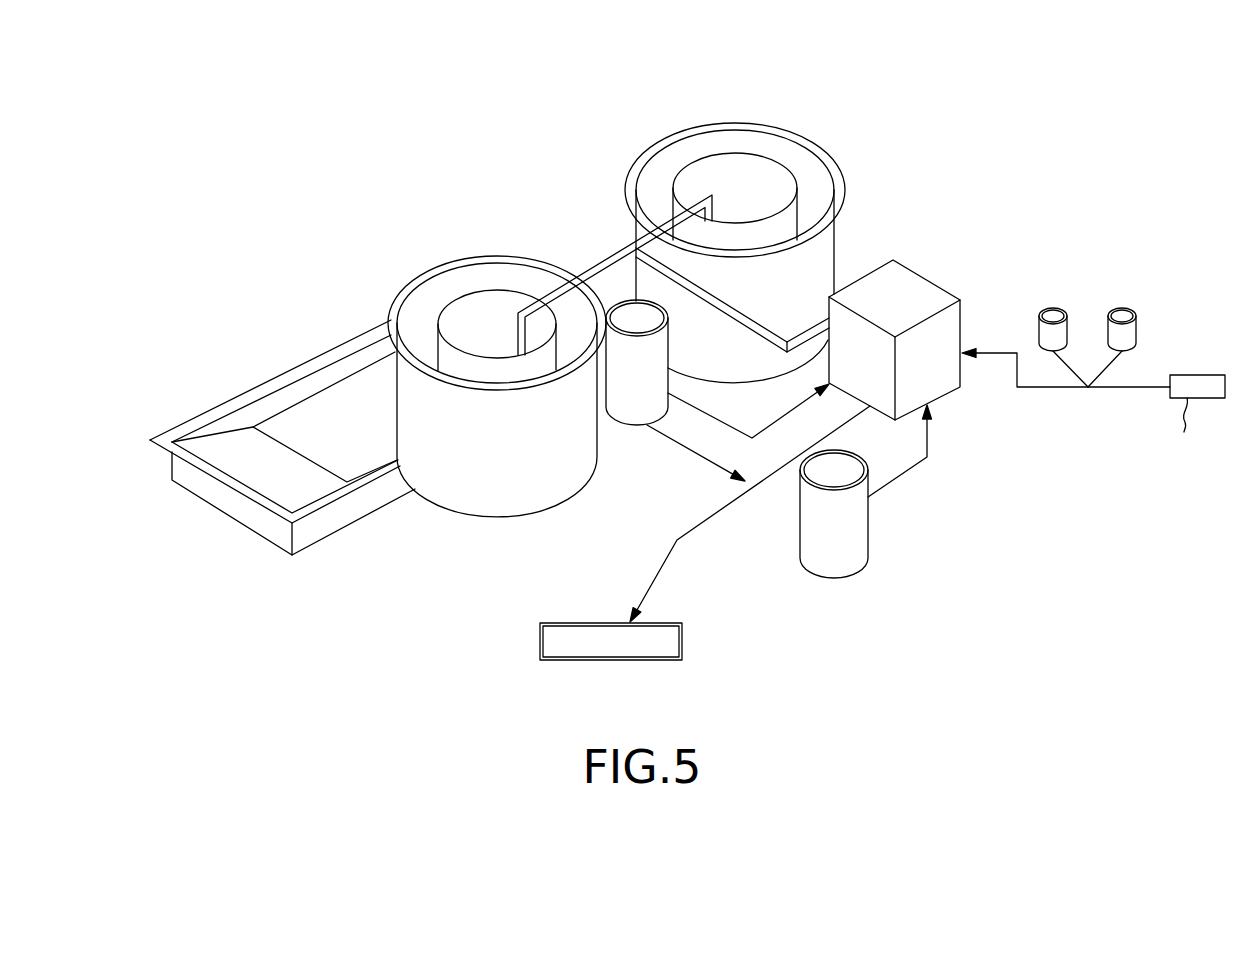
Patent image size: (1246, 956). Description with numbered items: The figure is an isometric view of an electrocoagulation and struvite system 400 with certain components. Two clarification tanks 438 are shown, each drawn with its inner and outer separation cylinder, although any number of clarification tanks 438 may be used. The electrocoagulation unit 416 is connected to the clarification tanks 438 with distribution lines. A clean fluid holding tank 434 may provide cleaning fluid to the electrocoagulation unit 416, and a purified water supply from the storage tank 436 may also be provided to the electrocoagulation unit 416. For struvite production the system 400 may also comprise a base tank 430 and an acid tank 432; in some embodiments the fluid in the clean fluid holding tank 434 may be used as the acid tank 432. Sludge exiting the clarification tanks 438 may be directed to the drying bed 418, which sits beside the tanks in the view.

The electrocoagulation and struvite system 400 is at (899, 117).
The electrocoagulation unit 416 is at (928, 287).
The drying bed 418 is at (300, 375).
The base tank 430 is at (1054, 308).
The acid tank 432 is at (1124, 308).
The clean fluid holding tank 434 is at (862, 553).
The storage tank 436 is at (628, 410).
The clarification tank 438 is at (431, 272).